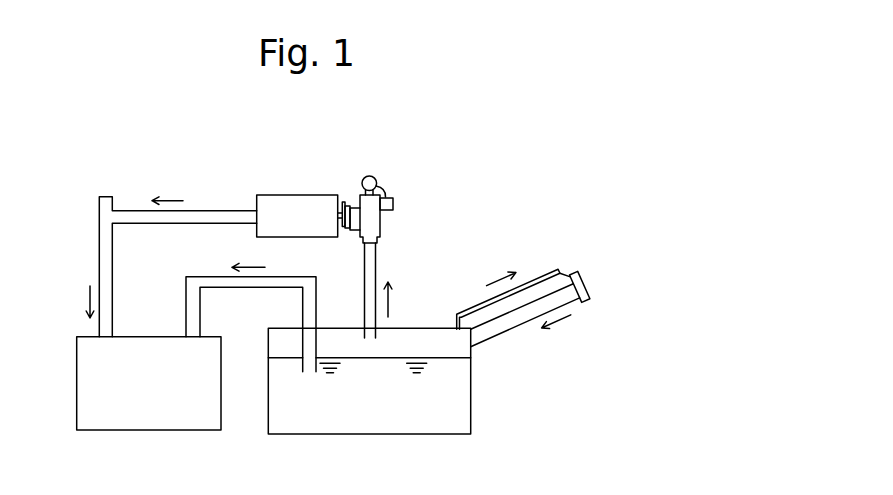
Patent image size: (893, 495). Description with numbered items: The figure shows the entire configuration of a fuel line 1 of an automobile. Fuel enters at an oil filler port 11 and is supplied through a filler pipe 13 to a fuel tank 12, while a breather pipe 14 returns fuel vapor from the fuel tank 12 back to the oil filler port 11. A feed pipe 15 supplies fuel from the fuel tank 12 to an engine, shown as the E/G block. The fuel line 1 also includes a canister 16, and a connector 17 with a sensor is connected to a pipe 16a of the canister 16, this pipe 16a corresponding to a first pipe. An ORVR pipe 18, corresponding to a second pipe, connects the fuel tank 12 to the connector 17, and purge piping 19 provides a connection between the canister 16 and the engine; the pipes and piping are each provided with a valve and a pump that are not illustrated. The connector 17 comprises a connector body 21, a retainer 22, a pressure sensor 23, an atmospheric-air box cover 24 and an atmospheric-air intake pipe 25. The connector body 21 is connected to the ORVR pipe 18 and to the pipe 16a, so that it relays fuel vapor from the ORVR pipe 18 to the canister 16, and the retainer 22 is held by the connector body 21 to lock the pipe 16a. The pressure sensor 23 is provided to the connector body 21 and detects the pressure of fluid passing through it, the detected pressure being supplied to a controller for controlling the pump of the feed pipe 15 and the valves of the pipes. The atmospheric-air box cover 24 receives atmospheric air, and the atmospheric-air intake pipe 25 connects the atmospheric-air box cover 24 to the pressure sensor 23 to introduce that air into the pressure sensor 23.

The fuel line 1 is at (520, 161).
The oil filler port 11 is at (575, 278).
The fuel tank 12 is at (470, 408).
The filler pipe 13 is at (513, 330).
The breather pipe 14 is at (537, 278).
The feed pipe 15 is at (205, 276).
The canister 16 is at (273, 195).
The pipe 16a is at (340, 216).
The connector with a sensor 17 is at (318, 142).
The ORVR pipe 18 is at (378, 272).
The purge piping 19 is at (99, 250).
The connector body 21 is at (382, 228).
The retainer 22 is at (347, 203).
The pressure sensor 23 is at (368, 176).
The atmospheric-air box cover 24 is at (394, 204).
The atmospheric-air intake pipe 25 is at (388, 183).